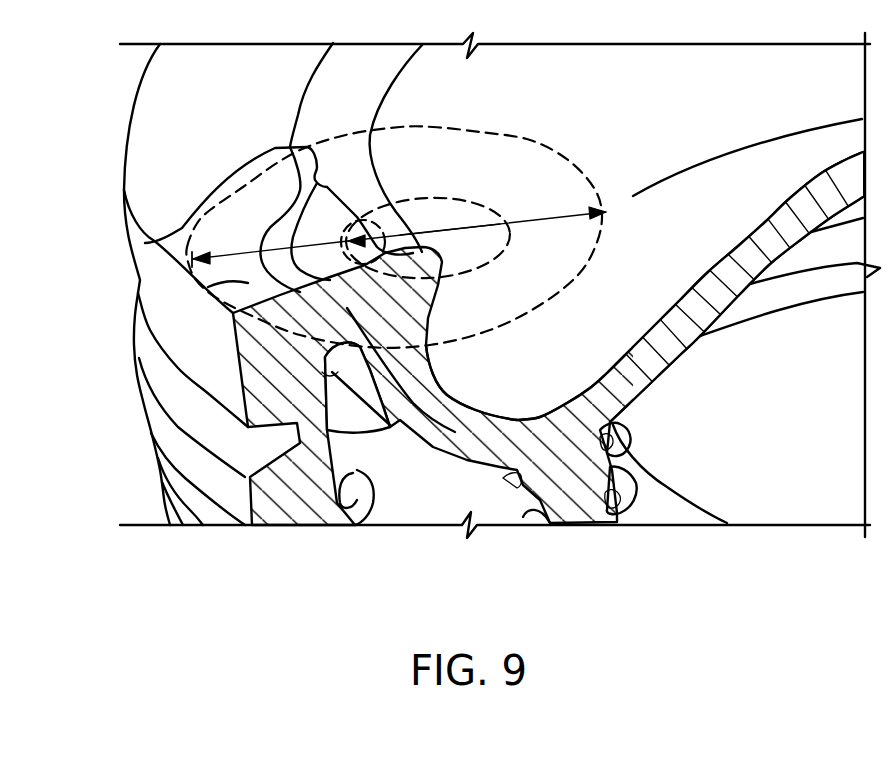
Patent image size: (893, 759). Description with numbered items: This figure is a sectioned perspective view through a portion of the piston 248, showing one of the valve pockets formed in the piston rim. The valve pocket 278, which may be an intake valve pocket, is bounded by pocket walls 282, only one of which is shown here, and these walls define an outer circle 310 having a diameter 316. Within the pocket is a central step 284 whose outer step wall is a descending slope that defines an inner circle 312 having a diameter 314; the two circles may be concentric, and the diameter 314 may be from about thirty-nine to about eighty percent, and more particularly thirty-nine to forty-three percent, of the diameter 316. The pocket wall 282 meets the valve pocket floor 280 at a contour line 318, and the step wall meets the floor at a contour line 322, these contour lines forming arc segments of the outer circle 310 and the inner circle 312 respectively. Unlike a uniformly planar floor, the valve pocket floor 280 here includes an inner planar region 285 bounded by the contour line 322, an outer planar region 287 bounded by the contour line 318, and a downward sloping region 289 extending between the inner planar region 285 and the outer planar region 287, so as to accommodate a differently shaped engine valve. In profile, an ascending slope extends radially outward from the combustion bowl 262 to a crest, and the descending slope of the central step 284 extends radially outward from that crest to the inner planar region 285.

The piston 248 is at (80, 146).
The combustion bowl 262 is at (553, 383).
The valve pocket 278 is at (184, 259).
The valve pocket floor 280 is at (215, 290).
The pocket wall 282 is at (210, 200).
The central step 284 is at (462, 220).
The inner planar region 285 is at (317, 213).
The outer planar region 287 is at (253, 187).
The downward sloping region 289 is at (287, 213).
The outer circle 310 is at (530, 138).
The inner circle 312 is at (410, 197).
The diameter of inner circle 314 is at (447, 227).
The diameter of outer circle 316 is at (533, 220).
The contour line 318 is at (278, 247).
The contour line 322 is at (548, 338).